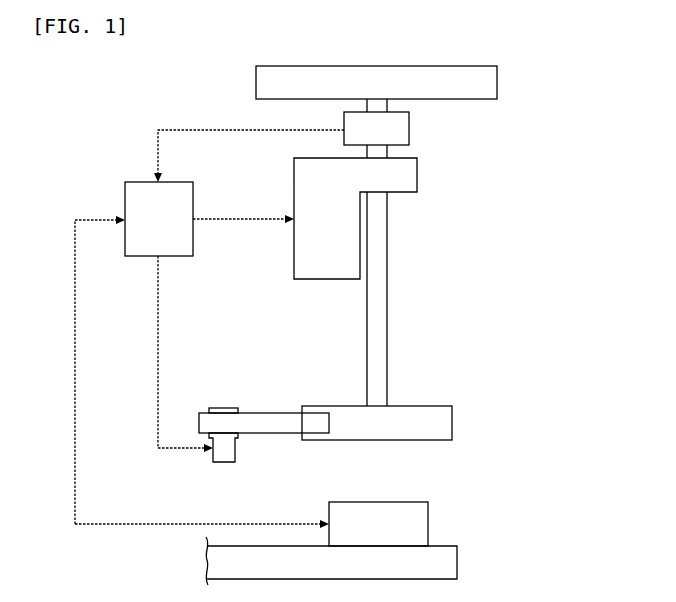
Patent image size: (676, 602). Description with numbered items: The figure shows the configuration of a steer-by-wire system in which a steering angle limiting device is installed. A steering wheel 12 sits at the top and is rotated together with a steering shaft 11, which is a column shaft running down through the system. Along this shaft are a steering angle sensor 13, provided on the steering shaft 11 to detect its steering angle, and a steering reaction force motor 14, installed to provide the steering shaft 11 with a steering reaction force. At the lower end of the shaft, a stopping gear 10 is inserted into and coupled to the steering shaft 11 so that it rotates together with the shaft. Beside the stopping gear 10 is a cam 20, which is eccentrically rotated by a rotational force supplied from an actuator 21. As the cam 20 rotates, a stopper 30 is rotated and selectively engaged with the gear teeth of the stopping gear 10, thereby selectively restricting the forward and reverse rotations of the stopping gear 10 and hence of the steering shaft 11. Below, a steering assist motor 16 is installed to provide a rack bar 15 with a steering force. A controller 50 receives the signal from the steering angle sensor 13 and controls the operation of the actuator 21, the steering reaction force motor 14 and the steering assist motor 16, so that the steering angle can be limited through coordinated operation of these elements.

The stopping gear 10 is at (447, 422).
The steering shaft 11 is at (387, 325).
The steering wheel 12 is at (497, 81).
The steering angle sensor 13 is at (409, 128).
The steering reaction force motor 14 is at (417, 178).
The rack bar 15 is at (452, 560).
The steering assist motor 16 is at (428, 522).
The cam 20 is at (225, 408).
The actuator 21 is at (236, 453).
The stopper 30 is at (267, 413).
The controller 50 is at (125, 200).